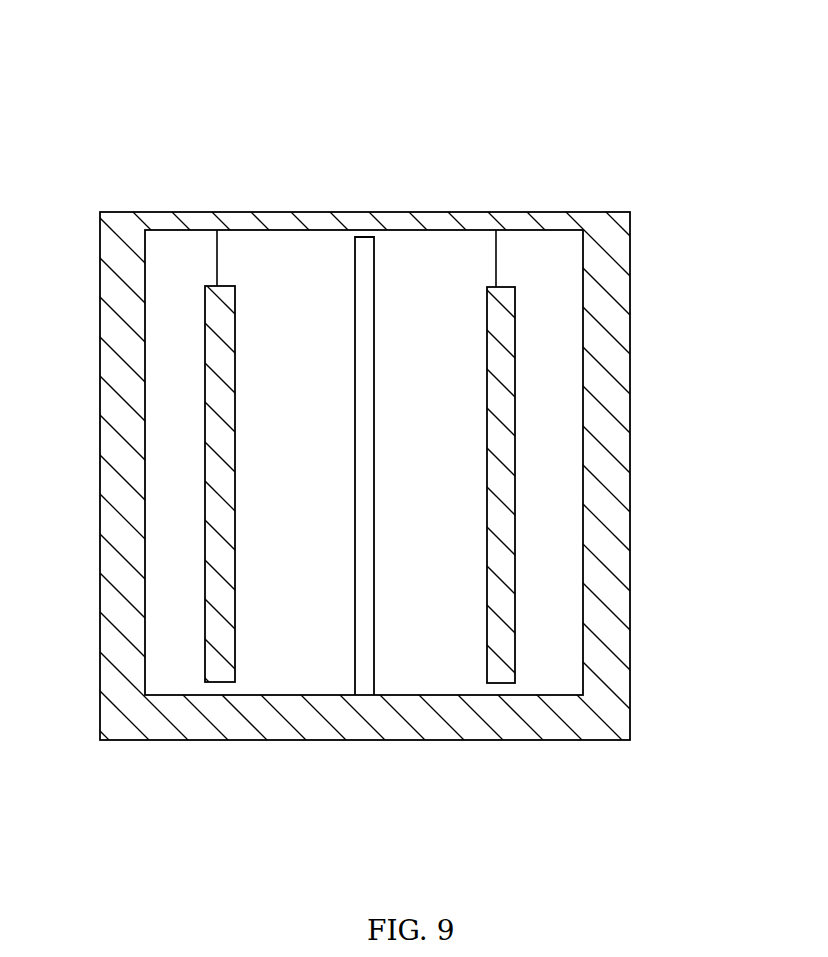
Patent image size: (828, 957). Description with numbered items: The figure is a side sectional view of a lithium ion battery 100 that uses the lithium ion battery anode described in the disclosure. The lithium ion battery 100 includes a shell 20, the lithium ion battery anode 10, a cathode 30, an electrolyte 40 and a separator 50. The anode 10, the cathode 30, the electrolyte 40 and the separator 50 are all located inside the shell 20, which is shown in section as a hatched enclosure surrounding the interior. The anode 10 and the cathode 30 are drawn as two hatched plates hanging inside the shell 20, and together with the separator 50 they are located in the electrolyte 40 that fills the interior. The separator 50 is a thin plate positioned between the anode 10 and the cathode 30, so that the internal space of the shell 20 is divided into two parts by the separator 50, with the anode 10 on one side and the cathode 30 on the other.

The lithium ion battery 100 is at (414, 401).
The shell 20 is at (630, 323).
The lithium ion battery anode 10 is at (218, 468).
The cathode 30 is at (515, 472).
The electrolyte 40 is at (442, 588).
The separator 50 is at (355, 285).